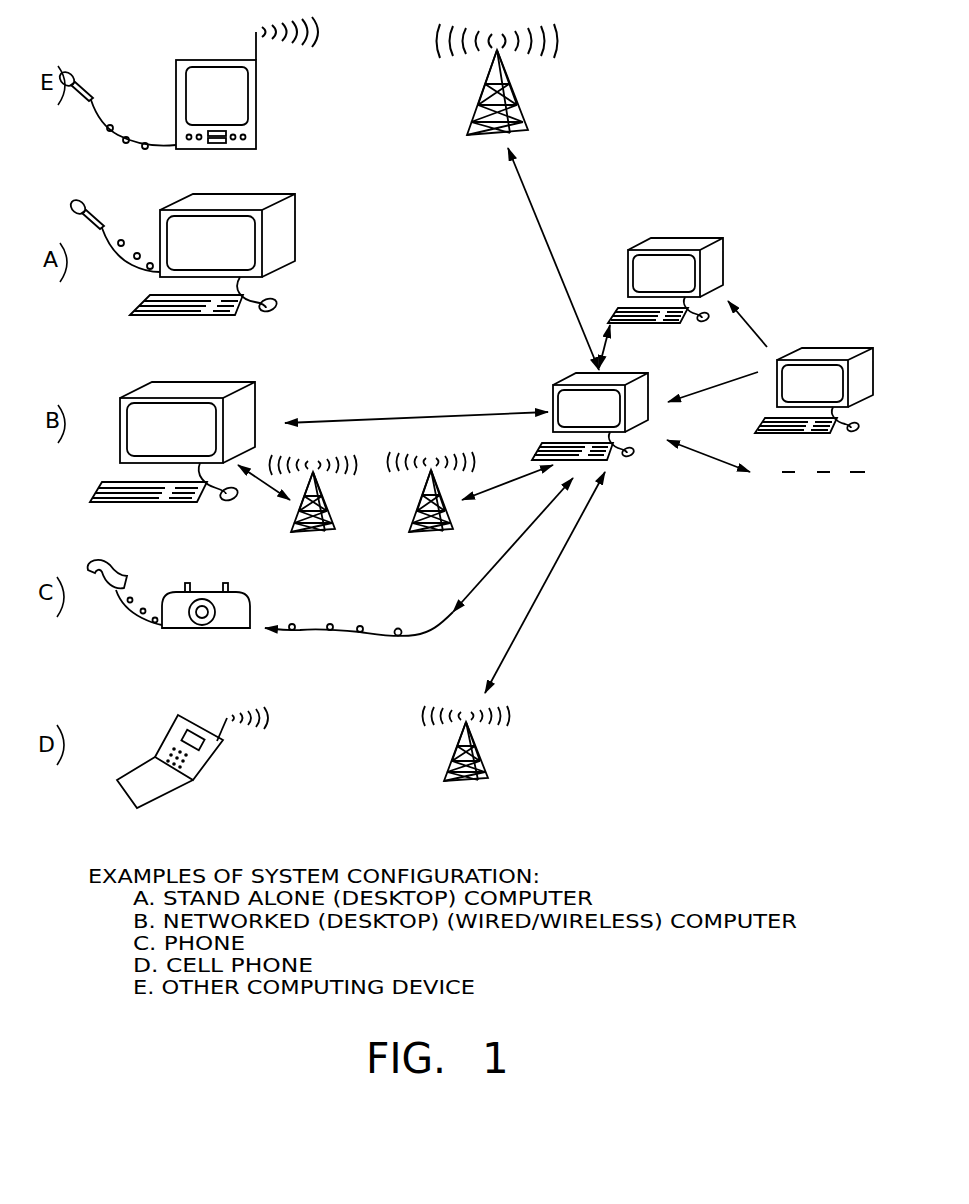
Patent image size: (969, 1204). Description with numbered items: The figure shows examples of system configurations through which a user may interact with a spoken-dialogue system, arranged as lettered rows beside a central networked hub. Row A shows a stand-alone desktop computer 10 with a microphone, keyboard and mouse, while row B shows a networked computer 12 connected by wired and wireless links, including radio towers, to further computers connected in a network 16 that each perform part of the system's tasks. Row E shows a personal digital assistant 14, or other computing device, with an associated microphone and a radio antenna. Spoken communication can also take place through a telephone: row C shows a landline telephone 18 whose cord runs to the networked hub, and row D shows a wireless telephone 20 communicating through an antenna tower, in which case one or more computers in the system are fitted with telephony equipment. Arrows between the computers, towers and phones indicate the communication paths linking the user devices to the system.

The single computer 10 is at (293, 239).
The networked computer 12 is at (255, 400).
The personal digital assistant 14 is at (256, 104).
The networked computer 16 is at (692, 204).
The landline telephone 18 is at (245, 600).
The wireless telephone 20 is at (197, 777).